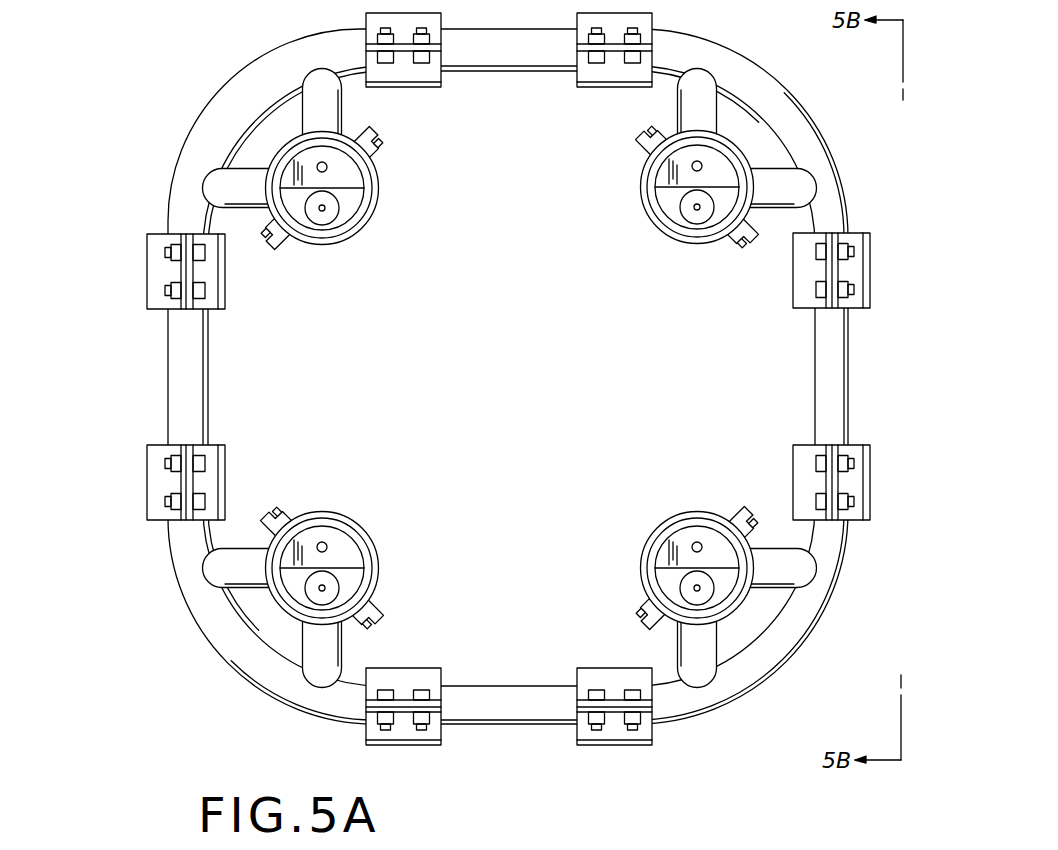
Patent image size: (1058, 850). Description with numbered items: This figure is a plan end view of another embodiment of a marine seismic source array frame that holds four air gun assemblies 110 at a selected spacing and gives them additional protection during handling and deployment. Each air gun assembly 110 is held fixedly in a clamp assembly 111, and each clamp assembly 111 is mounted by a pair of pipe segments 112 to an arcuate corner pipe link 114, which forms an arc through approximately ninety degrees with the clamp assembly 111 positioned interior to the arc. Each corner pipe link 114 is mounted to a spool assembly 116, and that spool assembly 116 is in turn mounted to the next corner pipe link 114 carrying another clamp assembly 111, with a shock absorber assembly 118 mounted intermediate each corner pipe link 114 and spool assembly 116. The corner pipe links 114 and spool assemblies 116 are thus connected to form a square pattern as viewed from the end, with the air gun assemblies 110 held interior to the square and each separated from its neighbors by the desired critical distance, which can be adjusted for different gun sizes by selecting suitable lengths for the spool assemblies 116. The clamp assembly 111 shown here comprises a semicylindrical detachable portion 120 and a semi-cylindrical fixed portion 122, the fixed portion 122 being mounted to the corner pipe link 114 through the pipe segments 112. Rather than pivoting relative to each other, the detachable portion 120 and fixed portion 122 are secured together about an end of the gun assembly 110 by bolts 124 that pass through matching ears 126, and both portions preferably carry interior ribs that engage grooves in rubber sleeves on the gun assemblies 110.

The air gun assembly 110 is at (505, 377).
The clamp assembly 111 is at (370, 229).
The pipe segment 112 is at (331, 112).
The arcuate corner pipe link 114 is at (222, 118).
The spool assembly 116 is at (483, 71).
The shock absorber assembly 118 is at (596, 89).
The semicylindrical detachable portion 120 is at (675, 242).
The semi-cylindrical fixed portion 122 is at (657, 206).
The bolt 124 is at (275, 520).
The ear 126 is at (280, 512).